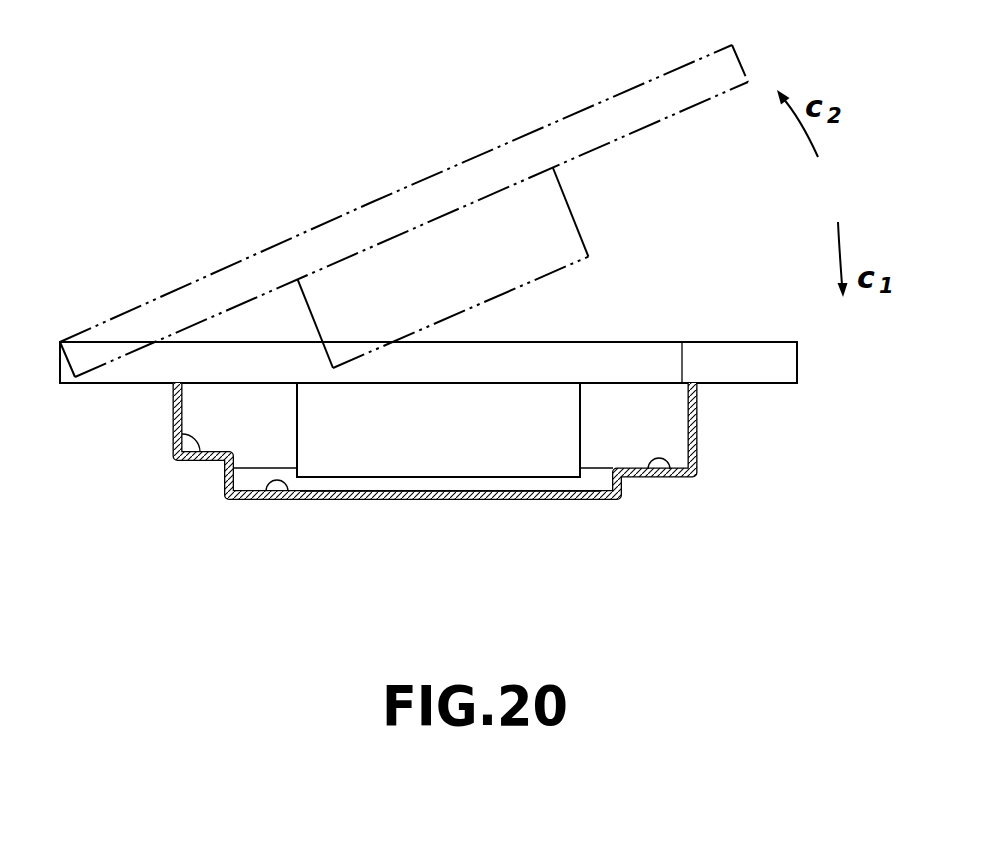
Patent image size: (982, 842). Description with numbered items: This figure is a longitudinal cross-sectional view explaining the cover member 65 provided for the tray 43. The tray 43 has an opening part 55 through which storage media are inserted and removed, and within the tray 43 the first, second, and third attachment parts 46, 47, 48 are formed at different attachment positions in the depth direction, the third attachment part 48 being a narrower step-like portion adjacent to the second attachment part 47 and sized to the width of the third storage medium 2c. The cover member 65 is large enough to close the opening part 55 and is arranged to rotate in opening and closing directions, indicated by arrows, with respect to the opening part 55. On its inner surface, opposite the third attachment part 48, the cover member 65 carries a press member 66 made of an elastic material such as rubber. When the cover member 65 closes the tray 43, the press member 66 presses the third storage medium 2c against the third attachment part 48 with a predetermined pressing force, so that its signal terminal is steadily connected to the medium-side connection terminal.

The cover member 65 is at (521, 155).
The press member 66 is at (560, 232).
The opening part 55 is at (682, 342).
The tray 43 is at (695, 442).
The first attachment part 46 is at (173, 440).
The second attachment part 47 is at (669, 478).
The third attachment part 48 is at (266, 500).
The third storage medium 2c is at (455, 499).